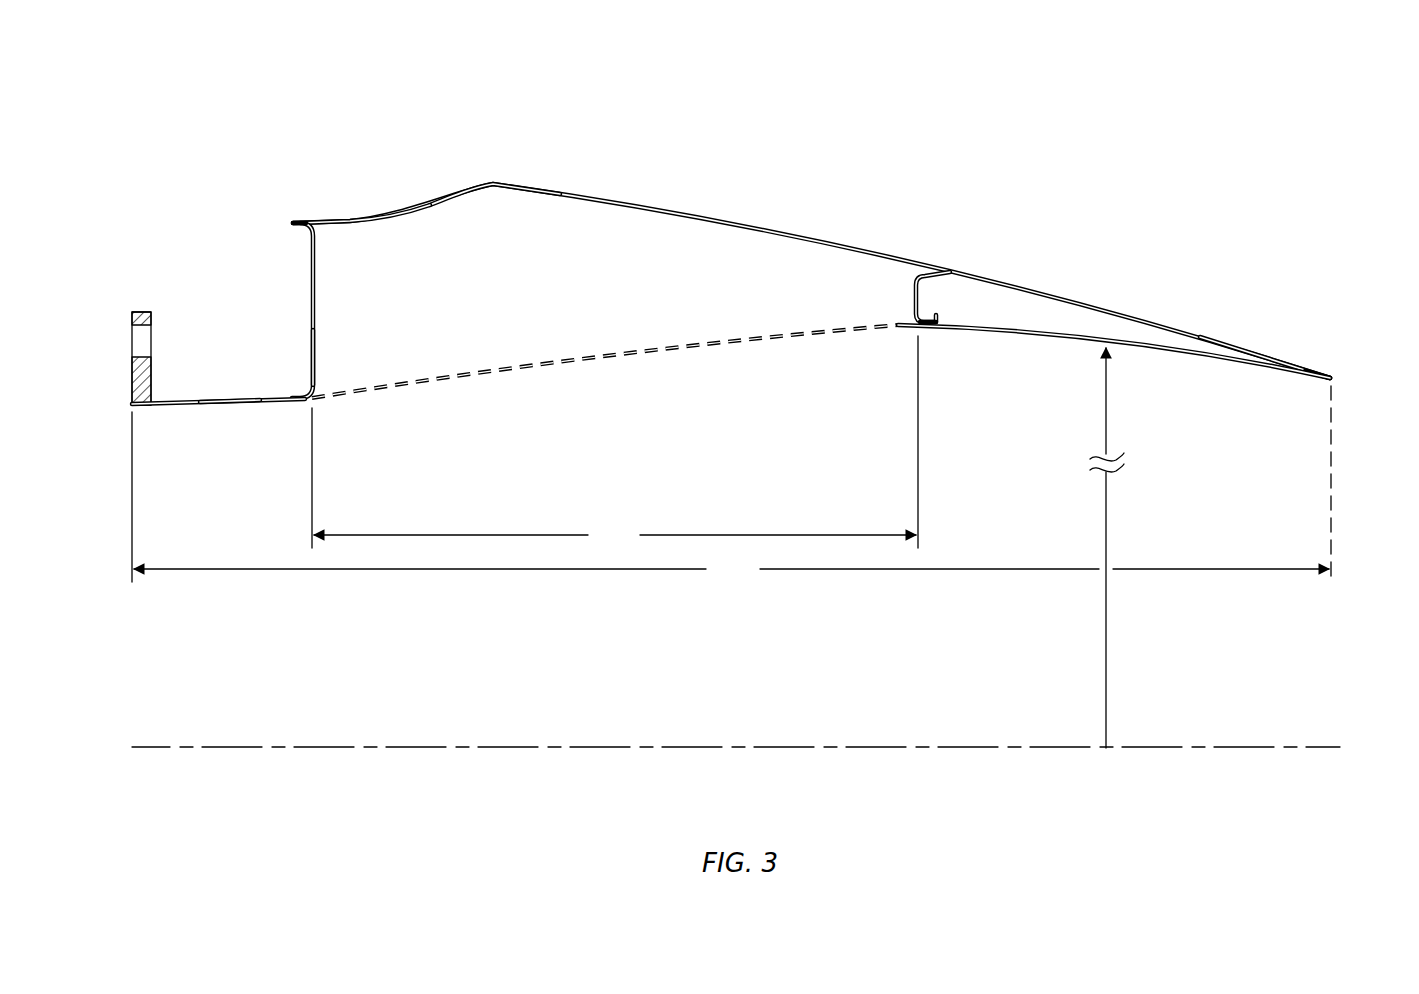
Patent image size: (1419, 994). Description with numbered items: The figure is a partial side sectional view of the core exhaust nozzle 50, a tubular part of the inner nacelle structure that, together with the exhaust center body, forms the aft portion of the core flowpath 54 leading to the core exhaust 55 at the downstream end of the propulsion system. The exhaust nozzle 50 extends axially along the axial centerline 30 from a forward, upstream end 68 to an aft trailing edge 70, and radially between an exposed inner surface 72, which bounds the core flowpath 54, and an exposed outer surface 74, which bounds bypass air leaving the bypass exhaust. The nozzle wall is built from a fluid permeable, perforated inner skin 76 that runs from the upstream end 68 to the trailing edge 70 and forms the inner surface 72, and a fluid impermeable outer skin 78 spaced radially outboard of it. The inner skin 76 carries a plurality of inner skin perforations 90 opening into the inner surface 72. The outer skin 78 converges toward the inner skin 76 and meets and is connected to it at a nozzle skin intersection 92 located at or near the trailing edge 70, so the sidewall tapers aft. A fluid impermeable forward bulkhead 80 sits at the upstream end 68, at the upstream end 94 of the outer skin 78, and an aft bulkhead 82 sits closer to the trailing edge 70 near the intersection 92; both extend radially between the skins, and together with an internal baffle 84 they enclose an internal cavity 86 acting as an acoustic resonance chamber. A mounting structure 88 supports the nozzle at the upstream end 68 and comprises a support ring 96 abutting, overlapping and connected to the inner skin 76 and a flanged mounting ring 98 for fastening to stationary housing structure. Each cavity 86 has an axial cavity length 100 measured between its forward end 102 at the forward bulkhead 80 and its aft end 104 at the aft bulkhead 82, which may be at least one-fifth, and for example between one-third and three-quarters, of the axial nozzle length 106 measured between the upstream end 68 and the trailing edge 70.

The axial centerline 30 is at (137, 749).
The exhaust nozzle 50 is at (1082, 146).
The core flowpath 54 is at (650, 503).
The core exhaust 55 is at (1334, 408).
The upstream end 68 is at (132, 404).
The trailing edge 70 is at (1333, 378).
The inner surface 72 is at (702, 350).
The outer surface 74 is at (672, 208).
The inner skin 76 is at (426, 403).
The outer skin 78 is at (447, 188).
The forward bulkhead 80 is at (302, 288).
The aft bulkhead 82 is at (940, 302).
The internal baffle 84 is at (372, 250).
The internal cavity 86 is at (542, 298).
The mounting structure 88 is at (101, 309).
The inner skin perforations 90 is at (588, 362).
The nozzle skin intersection 92 is at (1262, 340).
The upstream end of outer skin 94 is at (294, 223).
The support ring 96 is at (232, 406).
The mounting ring 98 is at (132, 375).
The axial cavity length 100 is at (615, 535).
The forward end of cavity 102 is at (312, 340).
The aft end of cavity 104 is at (935, 328).
The axial nozzle length 106 is at (731, 569).